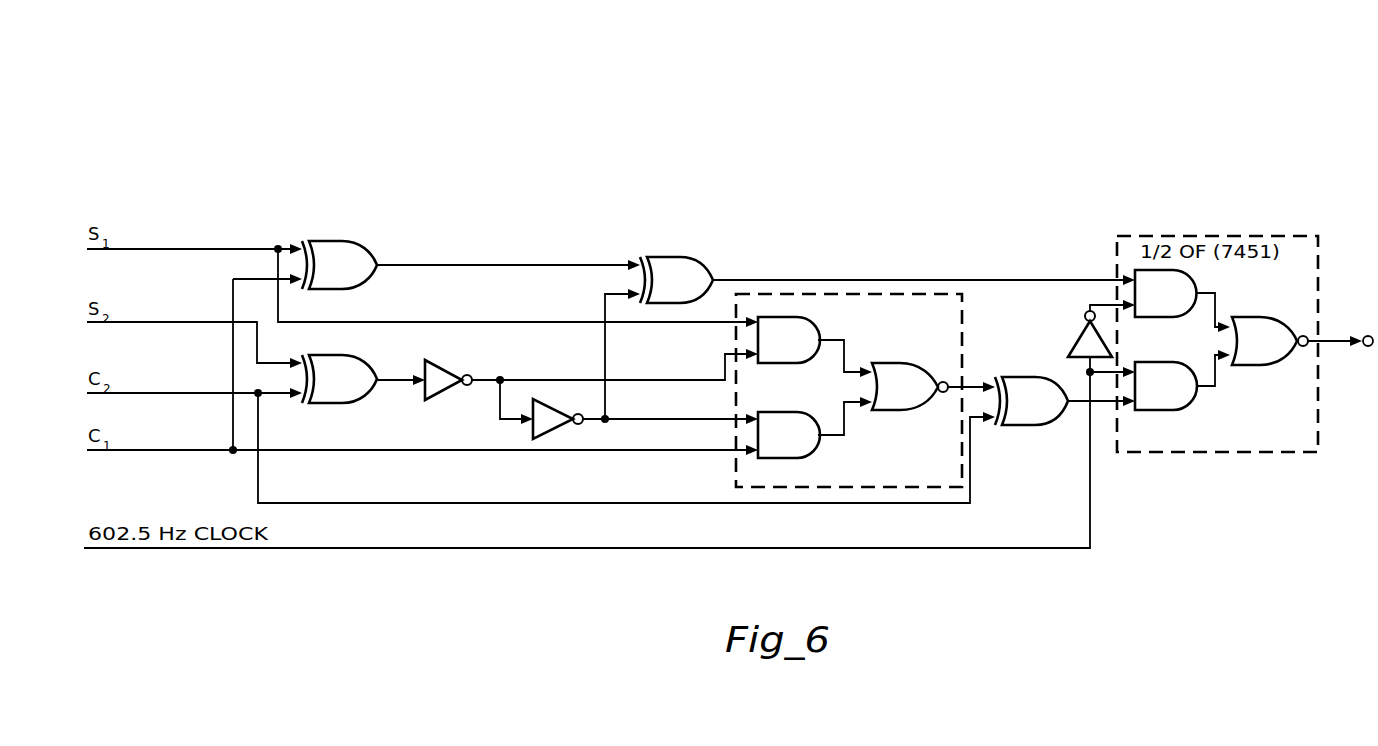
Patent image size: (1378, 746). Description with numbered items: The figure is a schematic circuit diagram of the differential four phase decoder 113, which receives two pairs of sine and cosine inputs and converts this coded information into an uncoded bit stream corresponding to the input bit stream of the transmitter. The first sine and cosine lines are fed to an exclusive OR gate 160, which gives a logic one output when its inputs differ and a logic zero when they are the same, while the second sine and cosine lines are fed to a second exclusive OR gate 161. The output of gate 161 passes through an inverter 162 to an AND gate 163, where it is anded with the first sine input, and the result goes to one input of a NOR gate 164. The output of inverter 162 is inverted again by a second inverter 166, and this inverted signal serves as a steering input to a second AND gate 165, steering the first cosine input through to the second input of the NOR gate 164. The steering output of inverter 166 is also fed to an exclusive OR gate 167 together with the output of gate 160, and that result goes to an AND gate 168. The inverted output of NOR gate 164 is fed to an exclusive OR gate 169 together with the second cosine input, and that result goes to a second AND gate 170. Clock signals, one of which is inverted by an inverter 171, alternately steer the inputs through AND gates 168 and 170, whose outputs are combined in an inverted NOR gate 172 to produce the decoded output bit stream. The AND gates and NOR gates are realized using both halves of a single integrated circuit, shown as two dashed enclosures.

The differential four phase decoder 113 is at (795, 271).
The exclusive OR gate 160 is at (340, 241).
The second exclusive OR gate 161 is at (340, 355).
The inverter 162 is at (446, 370).
The AND gate 163 is at (818, 323).
The NOR gate 164 is at (893, 363).
The second AND gate 165 is at (810, 411).
The second inverter 166 is at (559, 391).
The exclusive OR gate 167 is at (688, 258).
The AND gate 168 is at (1180, 304).
The exclusive OR gate 169 is at (1024, 378).
The second AND gate 170 is at (1183, 395).
The inverter 171 is at (1077, 343).
The inverted NOR gate 172 is at (1270, 318).